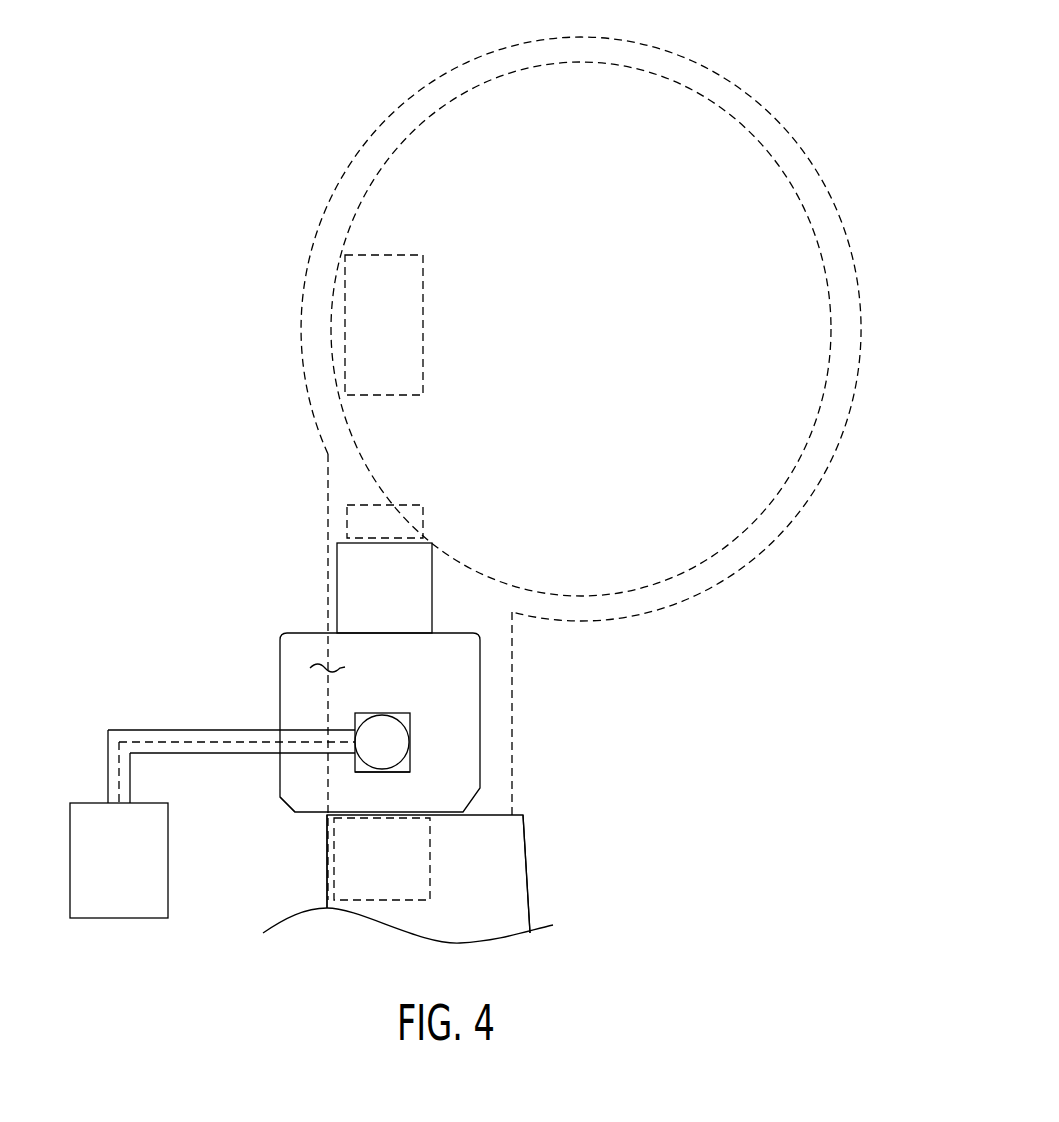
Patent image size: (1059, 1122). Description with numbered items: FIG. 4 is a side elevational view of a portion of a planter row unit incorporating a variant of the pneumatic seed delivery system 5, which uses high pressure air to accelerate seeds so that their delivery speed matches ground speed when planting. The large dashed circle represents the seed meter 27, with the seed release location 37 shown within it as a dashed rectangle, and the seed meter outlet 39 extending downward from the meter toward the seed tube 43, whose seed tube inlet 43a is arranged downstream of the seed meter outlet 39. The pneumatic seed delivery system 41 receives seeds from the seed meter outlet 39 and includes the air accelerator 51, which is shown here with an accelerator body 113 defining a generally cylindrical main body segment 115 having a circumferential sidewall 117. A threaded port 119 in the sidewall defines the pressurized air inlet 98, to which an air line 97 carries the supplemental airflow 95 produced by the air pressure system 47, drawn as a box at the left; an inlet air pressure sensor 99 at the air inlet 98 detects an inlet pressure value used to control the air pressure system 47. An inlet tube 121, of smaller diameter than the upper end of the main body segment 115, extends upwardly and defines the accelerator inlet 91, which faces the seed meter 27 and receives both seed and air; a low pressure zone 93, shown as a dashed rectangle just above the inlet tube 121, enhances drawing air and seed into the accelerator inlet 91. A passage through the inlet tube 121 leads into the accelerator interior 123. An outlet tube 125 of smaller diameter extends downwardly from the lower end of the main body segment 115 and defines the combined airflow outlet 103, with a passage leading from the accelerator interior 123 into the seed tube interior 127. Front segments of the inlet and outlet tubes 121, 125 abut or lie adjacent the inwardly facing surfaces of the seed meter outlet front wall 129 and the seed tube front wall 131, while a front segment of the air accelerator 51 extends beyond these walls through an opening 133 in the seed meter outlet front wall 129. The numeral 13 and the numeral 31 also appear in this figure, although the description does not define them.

The pneumatic seed delivery system 5 is at (165, 570).
The bicycle wheel 13 is at (298, 98).
The seed meter 27 is at (682, 50).
The rim 31 is at (753, 203).
The seed release location 37 is at (403, 322).
The seed meter outlet 39 is at (513, 697).
The pneumatic seed delivery system 41 is at (162, 647).
The seed tube 43 is at (438, 869).
The seed tube inlet 43a is at (507, 880).
The air pressure system 47 is at (118, 893).
The air accelerator 51 is at (300, 543).
The accelerator inlet 91 is at (413, 558).
The low pressure zone 93 is at (410, 507).
The supplemental airflow 95 is at (158, 735).
The air line 97 is at (108, 765).
The pressurized air inlet 98 is at (410, 745).
The inlet air pressure sensor 99 is at (380, 770).
The combined airflow outlet 103 is at (383, 900).
The accelerator body 113 is at (275, 642).
The accelerator main body segment 115 is at (262, 712).
The circumferential sidewall 117 is at (308, 782).
The threaded port 119 is at (355, 720).
The inlet tube 121 is at (418, 574).
The accelerator interior 123 is at (457, 661).
The outlet tube 125 is at (340, 862).
The seed tube interior 127 is at (488, 848).
The seed meter outlet front wall 129 is at (328, 483).
The seed tube front wall 131 is at (327, 893).
The opening 133 is at (327, 650).